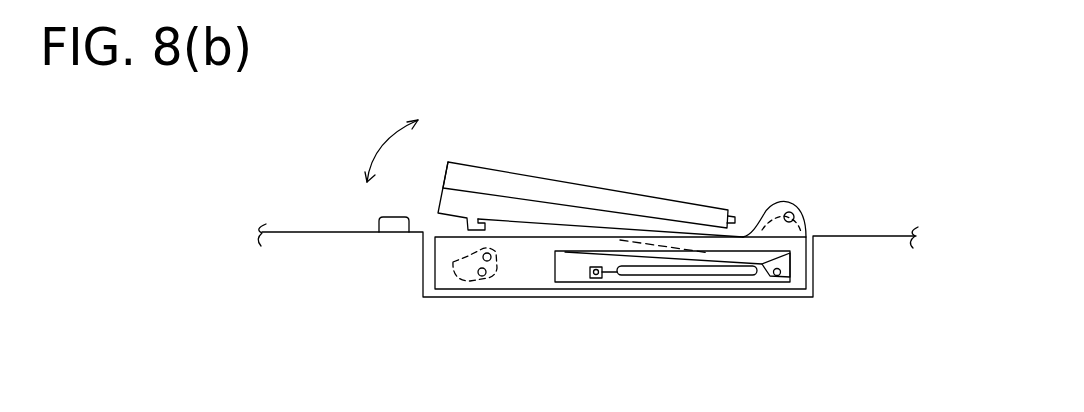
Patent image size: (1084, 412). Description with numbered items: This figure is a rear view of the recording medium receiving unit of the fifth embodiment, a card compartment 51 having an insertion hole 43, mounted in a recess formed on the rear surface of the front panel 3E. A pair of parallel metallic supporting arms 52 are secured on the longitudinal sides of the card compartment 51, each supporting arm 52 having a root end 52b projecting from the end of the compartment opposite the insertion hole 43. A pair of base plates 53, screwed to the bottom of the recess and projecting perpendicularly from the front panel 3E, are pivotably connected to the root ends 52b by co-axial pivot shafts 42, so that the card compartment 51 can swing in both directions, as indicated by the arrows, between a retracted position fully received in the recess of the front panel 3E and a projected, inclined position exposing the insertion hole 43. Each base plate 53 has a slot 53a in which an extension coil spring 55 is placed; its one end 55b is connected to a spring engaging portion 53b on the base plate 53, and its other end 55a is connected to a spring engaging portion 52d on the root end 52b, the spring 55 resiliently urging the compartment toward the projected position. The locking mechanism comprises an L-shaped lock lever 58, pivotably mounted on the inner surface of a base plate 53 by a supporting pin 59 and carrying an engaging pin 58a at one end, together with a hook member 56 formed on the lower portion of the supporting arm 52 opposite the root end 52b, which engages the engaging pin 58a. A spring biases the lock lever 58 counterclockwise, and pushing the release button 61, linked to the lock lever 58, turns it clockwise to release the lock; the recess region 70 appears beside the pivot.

The front panel 3E is at (890, 235).
The pivot shaft 42 is at (797, 213).
The insertion hole 43 is at (443, 178).
The card compartment 51 is at (693, 210).
The supporting arm 52 is at (573, 203).
The root end 52b is at (802, 232).
The spring engaging portion 52d is at (790, 277).
The base plate 53 is at (513, 282).
The slot 53a is at (567, 260).
The spring engaging portion 53b is at (607, 277).
The extension coil spring 55 is at (730, 270).
The other end of coil spring 55a is at (765, 273).
The one end of coil spring 55b is at (640, 280).
The hook member 56 is at (467, 232).
The lock lever 58 is at (470, 282).
The engaging pin 58a is at (491, 257).
The supporting pin 59 is at (482, 282).
The release button 61 is at (392, 215).
The recess 70 is at (857, 262).